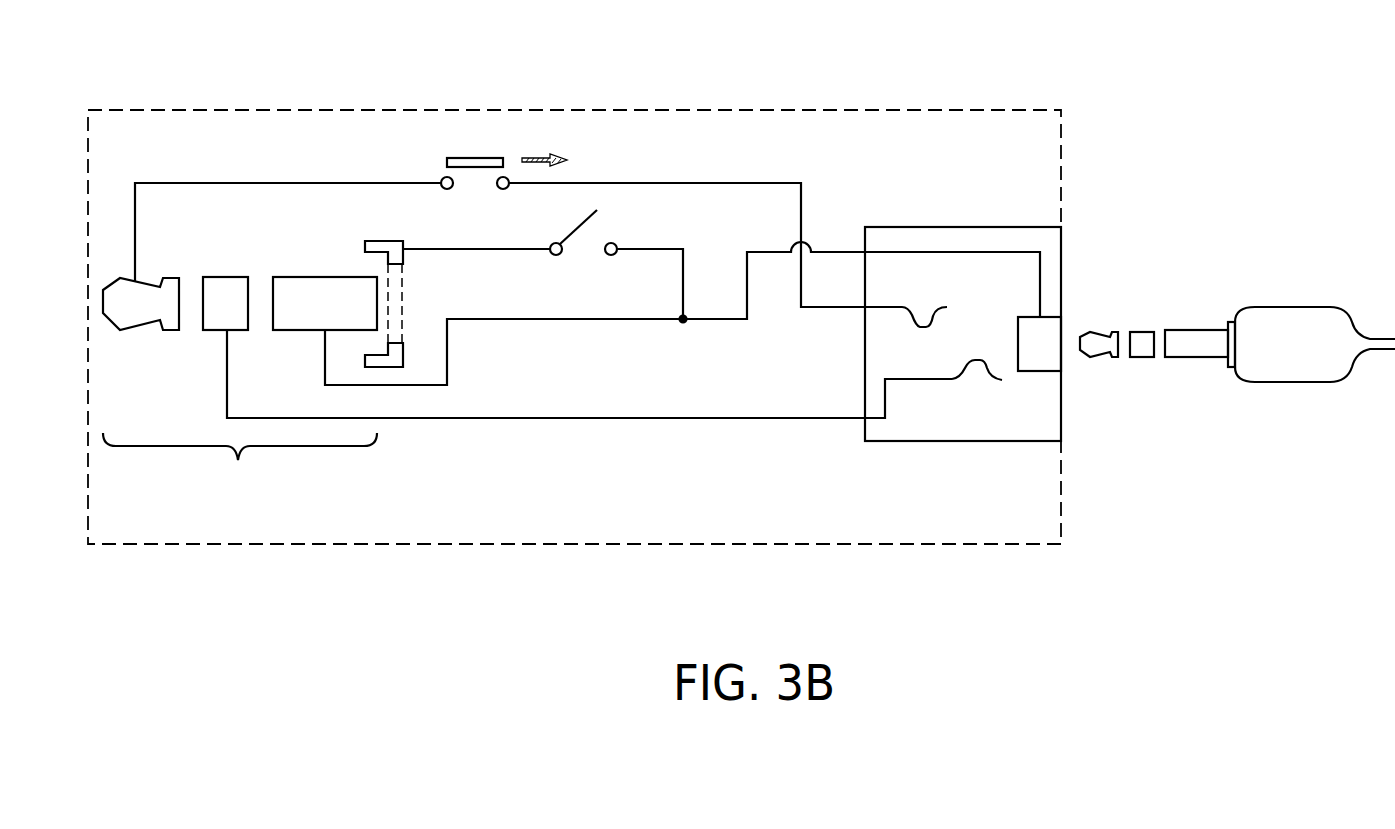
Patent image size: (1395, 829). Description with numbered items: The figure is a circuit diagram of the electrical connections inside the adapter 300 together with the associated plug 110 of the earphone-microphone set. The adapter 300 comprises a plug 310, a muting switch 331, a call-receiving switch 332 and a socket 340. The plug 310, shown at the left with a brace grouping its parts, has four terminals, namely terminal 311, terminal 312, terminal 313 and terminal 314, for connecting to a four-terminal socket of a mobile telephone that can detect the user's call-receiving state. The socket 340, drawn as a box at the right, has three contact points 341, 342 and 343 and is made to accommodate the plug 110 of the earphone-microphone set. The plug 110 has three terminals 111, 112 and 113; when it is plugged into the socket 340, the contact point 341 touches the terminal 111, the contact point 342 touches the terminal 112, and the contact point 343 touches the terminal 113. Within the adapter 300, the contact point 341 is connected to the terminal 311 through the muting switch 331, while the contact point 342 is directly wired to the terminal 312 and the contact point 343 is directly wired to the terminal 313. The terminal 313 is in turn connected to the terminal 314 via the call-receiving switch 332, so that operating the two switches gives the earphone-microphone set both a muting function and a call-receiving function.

The adapter 300 is at (782, 110).
The plug 310 is at (240, 469).
The terminal 311 is at (140, 325).
The terminal 312 is at (228, 277).
The terminal 313 is at (328, 277).
The terminal 314 is at (383, 241).
The muting switch 331 is at (485, 166).
The call-receiving switch 332 is at (585, 225).
The socket 340 is at (958, 227).
The contact point 341 is at (913, 327).
The contact point 342 is at (960, 380).
The contact point 343 is at (1035, 371).
The plug 110 is at (1237, 293).
The terminal 111 is at (1100, 357).
The terminal 112 is at (1145, 357).
The terminal 113 is at (1212, 357).